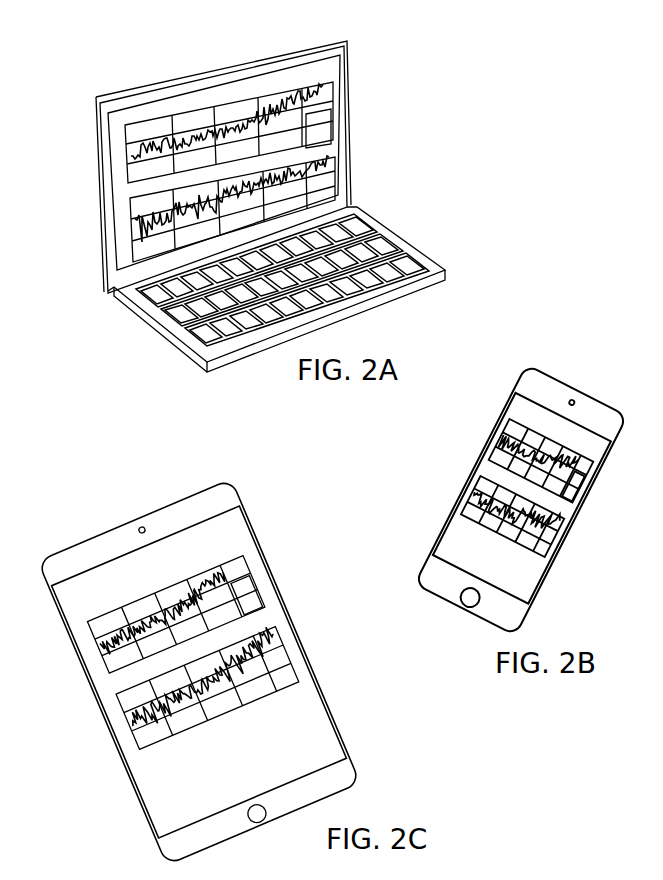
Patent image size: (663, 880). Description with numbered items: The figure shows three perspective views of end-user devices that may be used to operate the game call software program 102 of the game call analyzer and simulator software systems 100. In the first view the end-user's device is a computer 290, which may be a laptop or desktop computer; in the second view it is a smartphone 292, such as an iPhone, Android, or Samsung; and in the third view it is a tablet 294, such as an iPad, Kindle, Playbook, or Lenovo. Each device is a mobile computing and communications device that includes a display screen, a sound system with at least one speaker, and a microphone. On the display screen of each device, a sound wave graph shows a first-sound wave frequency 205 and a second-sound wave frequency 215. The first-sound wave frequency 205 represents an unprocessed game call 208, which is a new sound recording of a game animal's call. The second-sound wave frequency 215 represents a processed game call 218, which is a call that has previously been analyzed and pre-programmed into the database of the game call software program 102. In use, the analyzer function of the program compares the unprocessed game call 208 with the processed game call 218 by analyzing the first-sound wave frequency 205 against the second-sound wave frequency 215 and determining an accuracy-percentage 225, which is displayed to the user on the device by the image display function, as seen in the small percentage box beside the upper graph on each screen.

In FIG. 2A, the game call analyzer and simulator software systems 100 is at (512, 86).
In FIG. 2A, the game call software program 102 is at (544, 120).
In FIG. 2A, the first-sound wave frequency 205 is at (318, 82).
In FIG. 2A, the unprocessed game call 208 is at (235, 80).
In FIG. 2A, the second-sound wave frequency 215 is at (323, 162).
In FIG. 2A, the processed game call 218 is at (205, 176).
In FIG. 2C, the accuracy-percentage 225 is at (269, 604).
In FIG. 2A, the computer 290 is at (281, 197).
In FIG. 2B, the smartphone 292 is at (533, 363).
In FIG. 2C, the tablet 294 is at (199, 652).